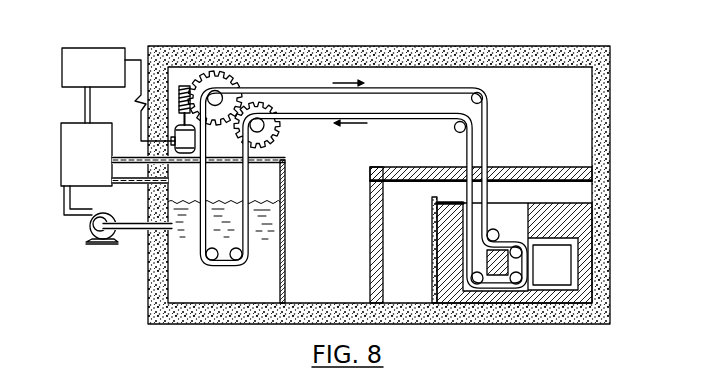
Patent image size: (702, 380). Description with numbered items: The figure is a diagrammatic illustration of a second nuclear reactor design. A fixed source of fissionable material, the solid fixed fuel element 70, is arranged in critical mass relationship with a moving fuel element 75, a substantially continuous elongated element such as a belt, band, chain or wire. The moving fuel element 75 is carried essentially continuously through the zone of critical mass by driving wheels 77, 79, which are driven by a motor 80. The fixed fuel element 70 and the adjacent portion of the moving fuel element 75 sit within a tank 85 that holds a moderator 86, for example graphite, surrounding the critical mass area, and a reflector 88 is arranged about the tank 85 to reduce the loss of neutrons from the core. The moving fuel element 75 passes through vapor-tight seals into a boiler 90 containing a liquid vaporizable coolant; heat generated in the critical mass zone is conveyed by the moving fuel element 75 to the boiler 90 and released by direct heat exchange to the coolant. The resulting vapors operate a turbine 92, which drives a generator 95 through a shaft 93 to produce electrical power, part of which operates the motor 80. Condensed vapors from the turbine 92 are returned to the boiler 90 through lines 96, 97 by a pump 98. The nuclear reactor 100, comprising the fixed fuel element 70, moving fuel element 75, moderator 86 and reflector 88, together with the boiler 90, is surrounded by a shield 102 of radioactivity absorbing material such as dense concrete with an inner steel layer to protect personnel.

The fixed fuel element 70 is at (559, 273).
The moving fuel element 75 is at (392, 121).
The driving wheel 77 is at (231, 86).
The driving wheel 79 is at (283, 137).
The motor 80 is at (196, 140).
The tank 85 is at (432, 230).
The moderator 86 is at (463, 203).
The reflector 88 is at (512, 167).
The boiler 90 is at (285, 277).
The turbine 92 is at (60, 174).
The shaft 93 is at (84, 104).
The generator 95 is at (104, 47).
The line 96 is at (81, 200).
The line 97 is at (113, 234).
The pump 98 is at (82, 240).
The nuclear reactor 100 is at (432, 268).
The shield 102 is at (402, 48).